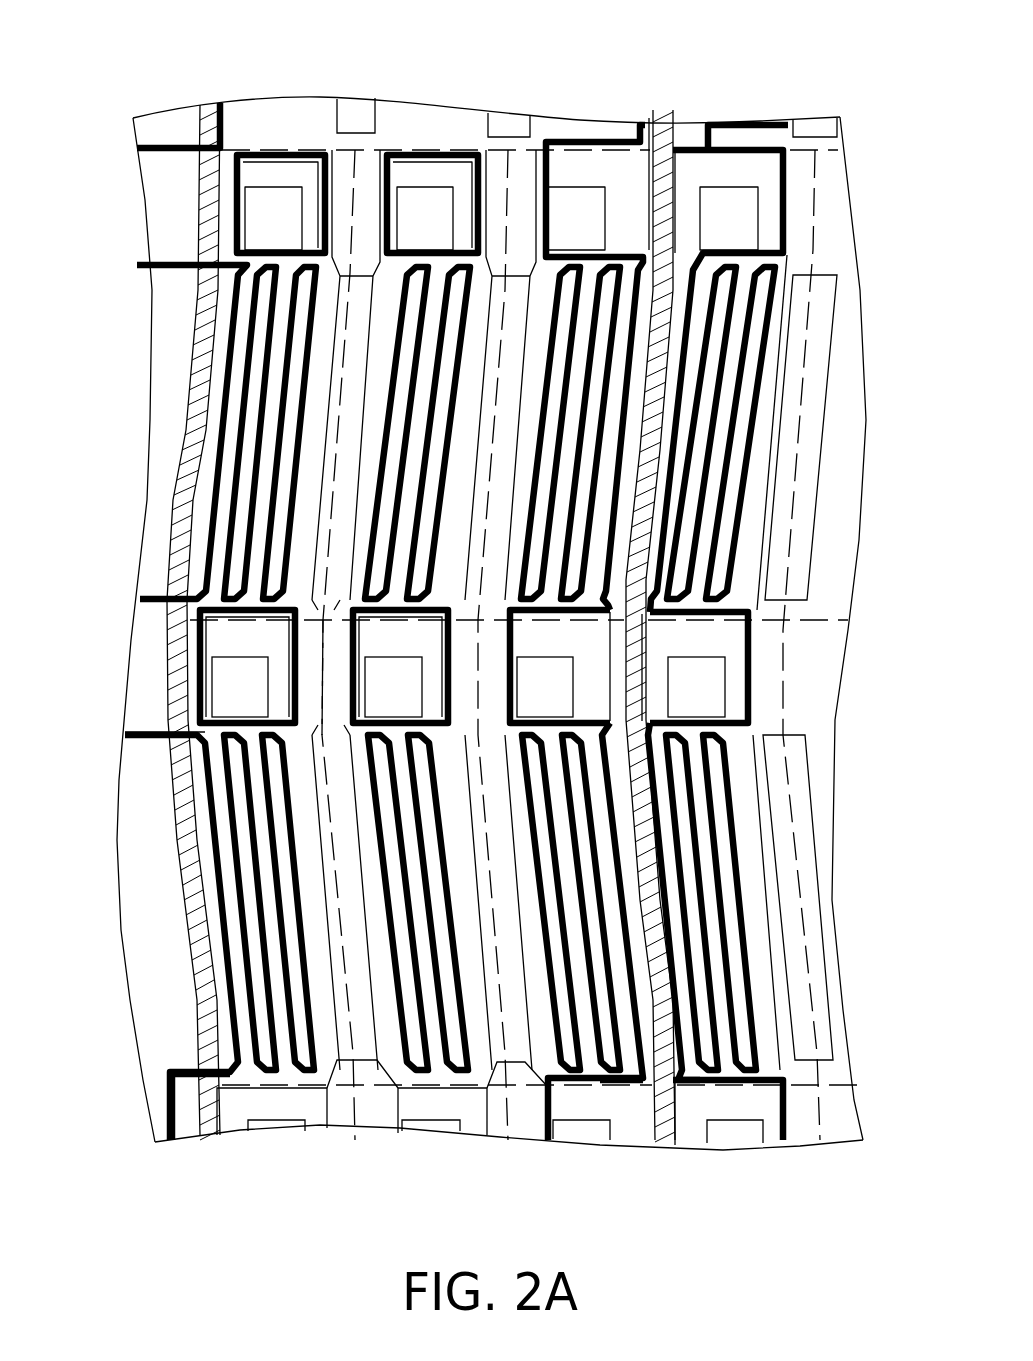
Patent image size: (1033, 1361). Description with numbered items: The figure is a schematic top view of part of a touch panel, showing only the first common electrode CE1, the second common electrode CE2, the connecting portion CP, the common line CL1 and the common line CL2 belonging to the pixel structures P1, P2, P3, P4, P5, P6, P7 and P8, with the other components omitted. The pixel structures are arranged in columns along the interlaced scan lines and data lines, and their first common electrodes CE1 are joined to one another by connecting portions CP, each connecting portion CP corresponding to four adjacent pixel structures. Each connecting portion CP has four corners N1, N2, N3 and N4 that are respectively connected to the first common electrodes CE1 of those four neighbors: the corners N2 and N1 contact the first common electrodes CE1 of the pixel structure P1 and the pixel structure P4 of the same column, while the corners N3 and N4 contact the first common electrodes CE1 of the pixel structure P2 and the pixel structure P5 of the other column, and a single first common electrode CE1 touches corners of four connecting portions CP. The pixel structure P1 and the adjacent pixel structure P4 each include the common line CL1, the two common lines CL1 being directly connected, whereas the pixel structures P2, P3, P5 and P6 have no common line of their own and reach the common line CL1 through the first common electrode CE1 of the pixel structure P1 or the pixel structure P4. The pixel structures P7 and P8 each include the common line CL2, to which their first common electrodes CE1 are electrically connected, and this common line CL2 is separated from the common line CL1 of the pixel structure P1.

The pixel structure P1 is at (273, 133).
The pixel structure P2 is at (413, 133).
The pixel structure P3 is at (543, 120).
The pixel structure P4 is at (307, 1087).
The pixel structure P5 is at (387, 1087).
The pixel structure P6 is at (522, 1087).
The pixel structure P7 is at (793, 117).
The pixel structure P8 is at (813, 1087).
The common line CL1 is at (200, 210).
The common line CL2 is at (660, 150).
The first common electrode CE1 is at (247, 1087).
The second common electrode CE2 is at (634, 1078).
The connecting portion CP is at (312, 688).
The corner N1 is at (300, 738).
The corner N2 is at (140, 602).
The corner N3 is at (350, 600).
The corner N4 is at (348, 735).